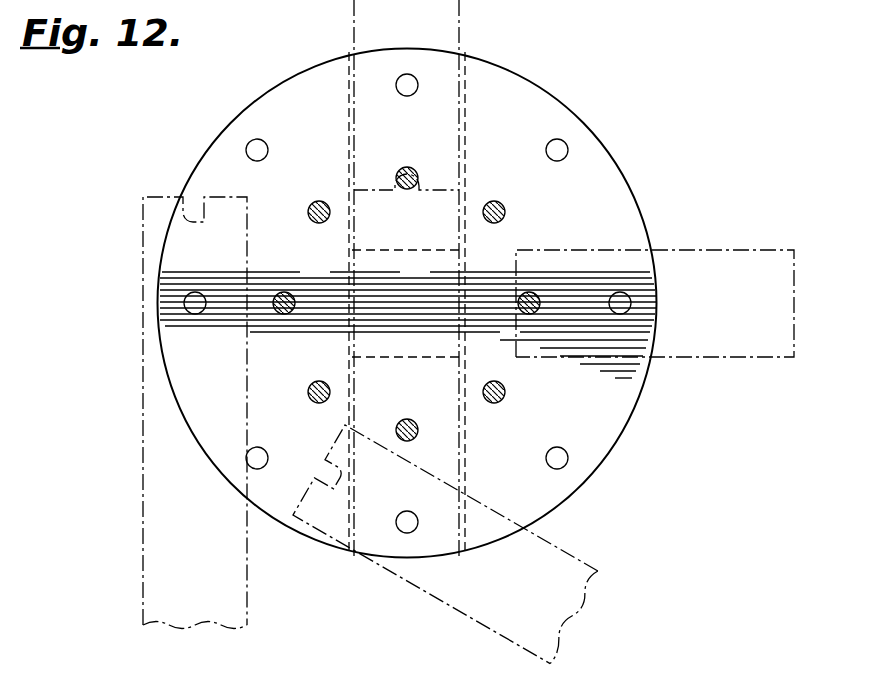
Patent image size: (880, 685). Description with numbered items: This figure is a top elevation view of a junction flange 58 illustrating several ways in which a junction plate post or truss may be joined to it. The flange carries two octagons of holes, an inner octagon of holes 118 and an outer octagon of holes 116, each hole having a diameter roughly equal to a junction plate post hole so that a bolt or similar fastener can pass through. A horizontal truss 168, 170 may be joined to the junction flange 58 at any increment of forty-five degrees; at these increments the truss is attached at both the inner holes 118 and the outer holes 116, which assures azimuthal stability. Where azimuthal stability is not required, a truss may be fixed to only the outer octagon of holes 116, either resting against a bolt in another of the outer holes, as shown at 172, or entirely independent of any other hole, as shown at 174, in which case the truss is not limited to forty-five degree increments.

The junction flange 58 is at (622, 424).
The outer holes 116 is at (566, 146).
The inner holes 118 is at (503, 208).
The horizontal truss 168 is at (730, 250).
The horizontal truss 170 is at (460, 30).
The truss fixed to outer holes resting against a bolt 172 is at (143, 563).
The truss fixed to outer holes independent of other holes 174 is at (565, 553).